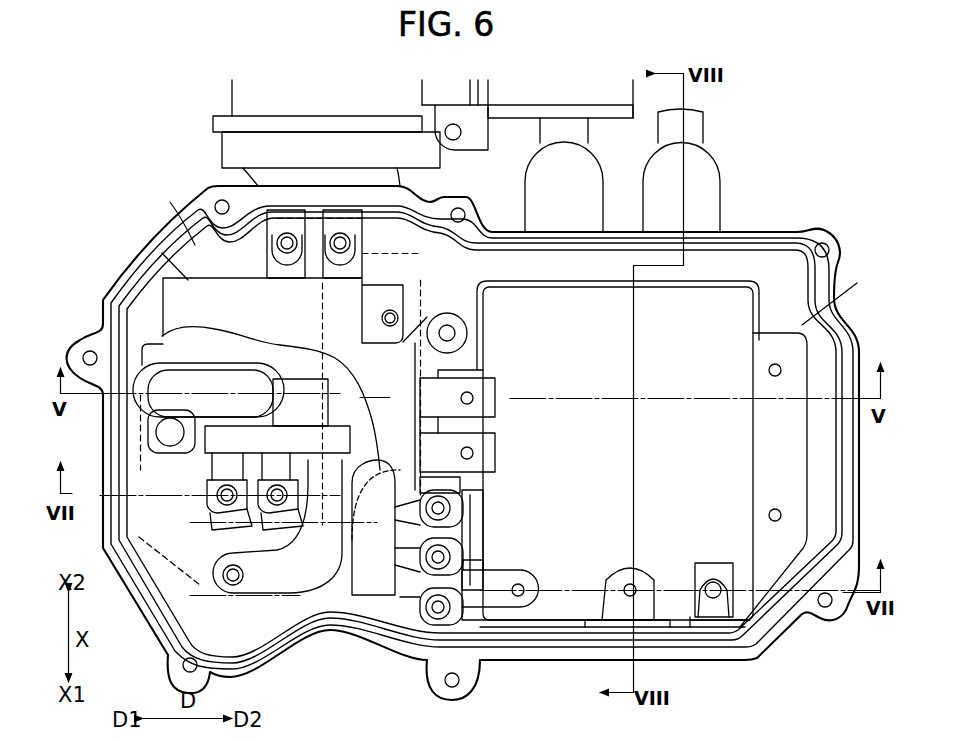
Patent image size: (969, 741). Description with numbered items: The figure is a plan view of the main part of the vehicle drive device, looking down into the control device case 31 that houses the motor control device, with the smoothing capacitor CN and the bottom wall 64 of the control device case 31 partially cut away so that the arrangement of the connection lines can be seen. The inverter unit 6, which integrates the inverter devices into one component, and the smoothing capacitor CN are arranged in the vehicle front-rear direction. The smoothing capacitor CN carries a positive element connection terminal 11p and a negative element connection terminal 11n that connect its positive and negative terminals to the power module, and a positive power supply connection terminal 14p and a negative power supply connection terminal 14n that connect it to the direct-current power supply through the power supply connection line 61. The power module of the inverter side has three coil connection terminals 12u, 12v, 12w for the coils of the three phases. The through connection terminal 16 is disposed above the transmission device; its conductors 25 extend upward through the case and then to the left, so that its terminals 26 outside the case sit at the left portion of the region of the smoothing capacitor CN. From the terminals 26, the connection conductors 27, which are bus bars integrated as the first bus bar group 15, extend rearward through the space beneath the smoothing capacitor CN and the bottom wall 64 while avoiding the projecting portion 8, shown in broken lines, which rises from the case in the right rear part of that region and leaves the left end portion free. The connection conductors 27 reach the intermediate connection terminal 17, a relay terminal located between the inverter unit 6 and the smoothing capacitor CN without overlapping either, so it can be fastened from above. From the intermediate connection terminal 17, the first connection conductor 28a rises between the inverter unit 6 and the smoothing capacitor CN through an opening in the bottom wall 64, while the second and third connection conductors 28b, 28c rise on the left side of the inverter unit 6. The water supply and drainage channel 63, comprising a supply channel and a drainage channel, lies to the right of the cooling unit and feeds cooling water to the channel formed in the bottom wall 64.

The inverter unit 6 is at (742, 630).
The projecting portion 8 is at (400, 263).
The positive element connection terminal 11p is at (492, 387).
The negative element connection terminal 11n is at (490, 446).
The coil connection terminal 12u is at (520, 565).
The coil connection terminal 12v is at (612, 565).
The coil connection terminal 12w is at (712, 570).
The positive power supply connection terminal 14p is at (270, 269).
The negative power supply connection terminal 14n is at (365, 268).
The first bus bar group 15 is at (302, 585).
The through connection terminal 16 is at (246, 362).
The intermediate connection terminal 17 is at (434, 630).
The conductors 25 is at (267, 462).
The terminals 26 is at (275, 507).
The connection conductors 27 is at (420, 505).
The first connection conductor 28a is at (500, 603).
The second connection conductor 28b is at (645, 578).
The third connection conductor 28c is at (707, 623).
The control device case 31 is at (781, 231).
The power supply connection line 61 is at (222, 148).
The water supply and drainage channel 63 is at (600, 153).
The bottom wall 64 is at (515, 253).
The smoothing capacitor CN is at (173, 280).